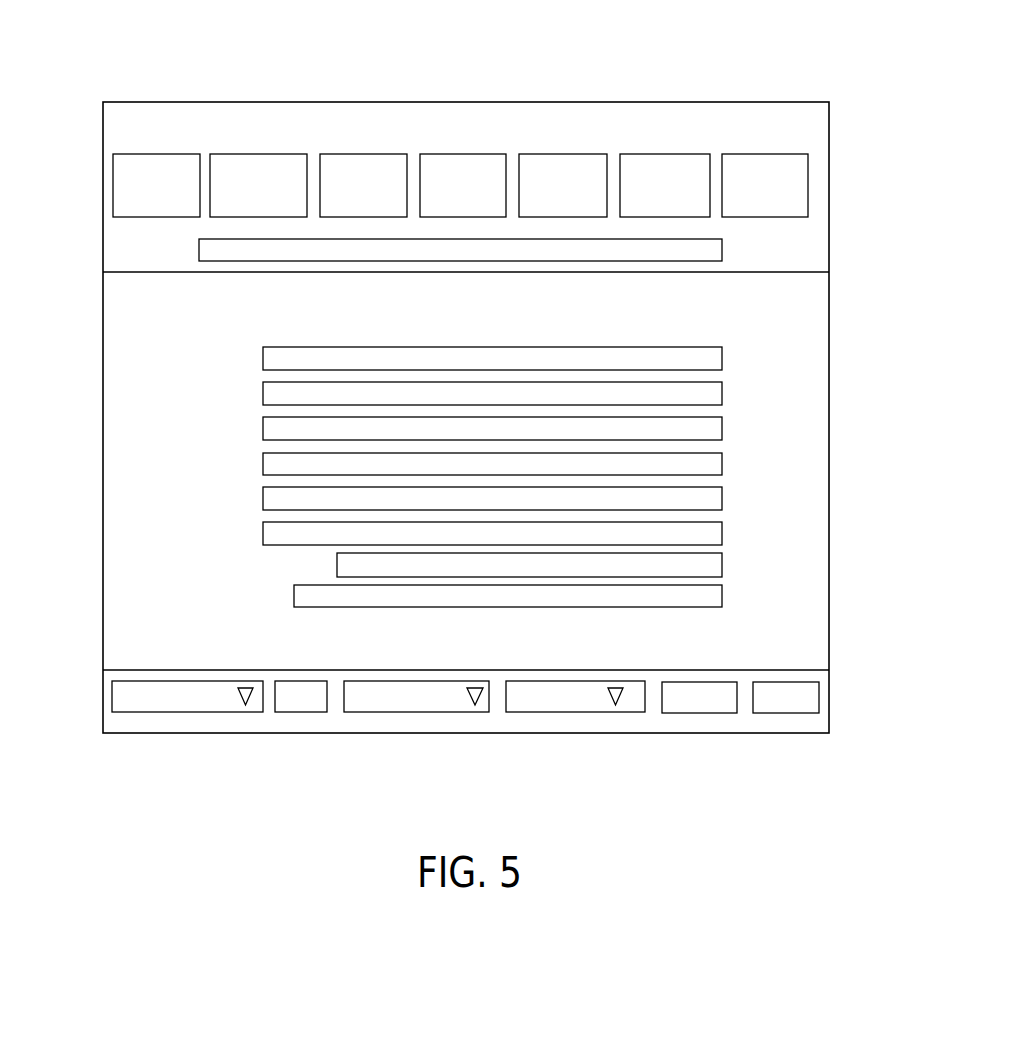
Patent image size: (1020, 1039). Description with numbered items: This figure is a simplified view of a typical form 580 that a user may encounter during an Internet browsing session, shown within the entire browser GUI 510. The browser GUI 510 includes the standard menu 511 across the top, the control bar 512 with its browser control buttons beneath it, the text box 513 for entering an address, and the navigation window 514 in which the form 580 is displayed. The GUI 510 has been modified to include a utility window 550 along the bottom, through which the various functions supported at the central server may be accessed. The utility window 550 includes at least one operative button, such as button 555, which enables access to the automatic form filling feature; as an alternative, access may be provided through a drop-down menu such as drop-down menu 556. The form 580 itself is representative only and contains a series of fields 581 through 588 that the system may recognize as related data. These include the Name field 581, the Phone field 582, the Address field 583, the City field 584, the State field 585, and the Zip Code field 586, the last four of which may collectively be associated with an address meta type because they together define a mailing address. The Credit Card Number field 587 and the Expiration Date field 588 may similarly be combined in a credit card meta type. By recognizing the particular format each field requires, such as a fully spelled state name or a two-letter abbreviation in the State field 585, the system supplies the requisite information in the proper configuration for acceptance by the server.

The browser GUI 510 is at (776, 52).
The menu 511 is at (113, 122).
The control bar 512 is at (110, 185).
The text box 513 is at (115, 251).
The navigation window 514 is at (115, 334).
The utility window 550 is at (102, 700).
The button 555 is at (297, 714).
The drop-down menu 556 is at (402, 714).
The form 580 is at (818, 573).
The Name field 581 is at (516, 340).
The Phone field 582 is at (516, 378).
The Address field 583 is at (516, 411).
The City field 584 is at (516, 450).
The State field 585 is at (516, 484).
The Zip Code field 586 is at (516, 520).
The Credit Card Number field 587 is at (553, 549).
The Expiration Date field 588 is at (531, 584).